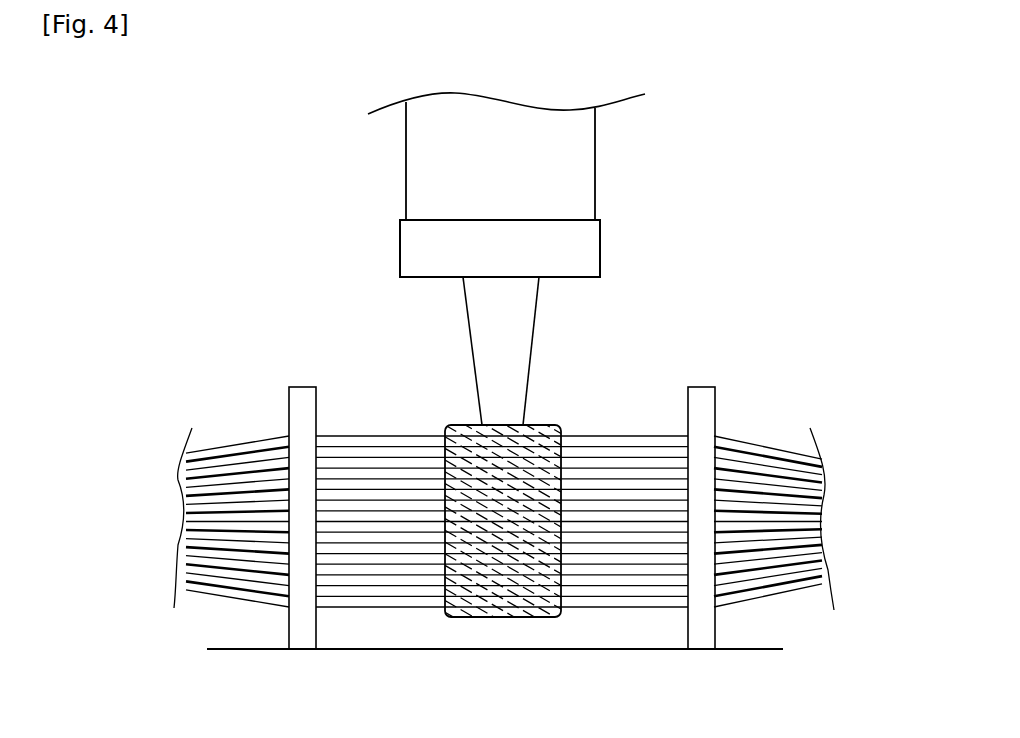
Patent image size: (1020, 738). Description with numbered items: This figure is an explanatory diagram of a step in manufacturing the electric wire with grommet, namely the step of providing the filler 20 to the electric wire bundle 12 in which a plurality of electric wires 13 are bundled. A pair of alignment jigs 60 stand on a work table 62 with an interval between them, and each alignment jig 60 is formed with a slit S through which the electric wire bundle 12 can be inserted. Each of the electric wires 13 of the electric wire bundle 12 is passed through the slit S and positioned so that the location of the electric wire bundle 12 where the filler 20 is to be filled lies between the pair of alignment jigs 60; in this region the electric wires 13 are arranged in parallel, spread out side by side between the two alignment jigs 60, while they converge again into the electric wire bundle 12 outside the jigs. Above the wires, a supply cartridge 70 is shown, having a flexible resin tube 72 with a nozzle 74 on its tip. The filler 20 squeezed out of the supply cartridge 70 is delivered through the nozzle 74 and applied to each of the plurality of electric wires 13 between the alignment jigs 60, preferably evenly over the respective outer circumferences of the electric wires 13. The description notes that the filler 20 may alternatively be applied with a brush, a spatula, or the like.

The supply cartridge 70 is at (604, 148).
The flexible resin tube 72 is at (592, 195).
The nozzle 74 is at (537, 323).
The filler 20 is at (543, 425).
The electric wires 13 is at (648, 470).
The electric wire bundle 12 is at (767, 444).
The alignment jigs 60 is at (303, 387).
The work table 62 is at (752, 649).
The slit S is at (302, 611).